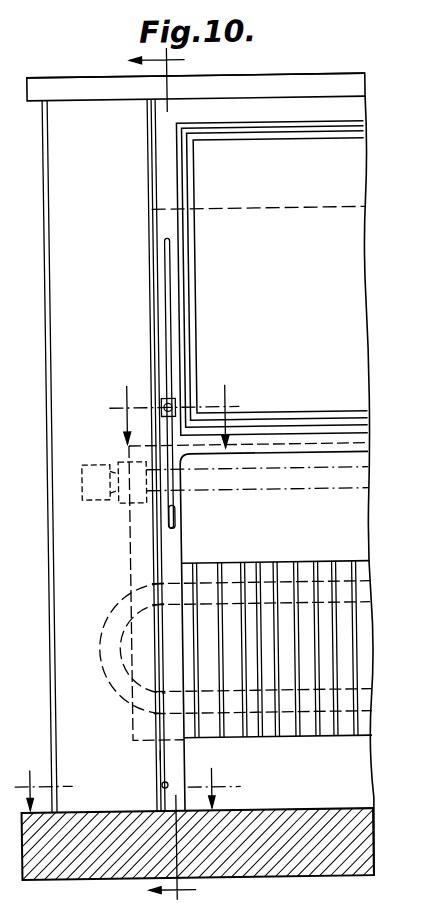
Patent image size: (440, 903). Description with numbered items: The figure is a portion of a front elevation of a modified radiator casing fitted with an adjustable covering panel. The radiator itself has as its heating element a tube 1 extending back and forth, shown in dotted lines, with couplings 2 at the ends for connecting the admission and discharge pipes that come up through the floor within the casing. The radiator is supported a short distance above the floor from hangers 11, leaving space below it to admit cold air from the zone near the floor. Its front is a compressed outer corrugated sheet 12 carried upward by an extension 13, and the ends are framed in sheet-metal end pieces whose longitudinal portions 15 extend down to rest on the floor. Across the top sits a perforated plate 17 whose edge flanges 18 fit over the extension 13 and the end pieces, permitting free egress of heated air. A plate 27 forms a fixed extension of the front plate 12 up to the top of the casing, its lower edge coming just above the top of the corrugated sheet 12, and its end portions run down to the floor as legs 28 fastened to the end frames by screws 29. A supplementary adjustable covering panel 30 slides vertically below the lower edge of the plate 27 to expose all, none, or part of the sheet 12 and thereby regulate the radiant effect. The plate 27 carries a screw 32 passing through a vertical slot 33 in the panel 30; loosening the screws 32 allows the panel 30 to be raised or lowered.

The tube 1 is at (103, 628).
The couplings 2 is at (90, 463).
The hangers 11 is at (173, 475).
The outer corrugated sheet 12 is at (355, 637).
The extension 13 is at (174, 407).
The longitudinal portions 15 is at (74, 456).
The plate 17 is at (262, 77).
The edge flanges 18 is at (353, 88).
The plate 27 is at (271, 278).
The legs 28 is at (168, 754).
The screws 29 is at (157, 786).
The supplementary adjustable covering panel 30 is at (276, 630).
The screw 32 is at (175, 400).
The vertical slot 33 is at (177, 518).